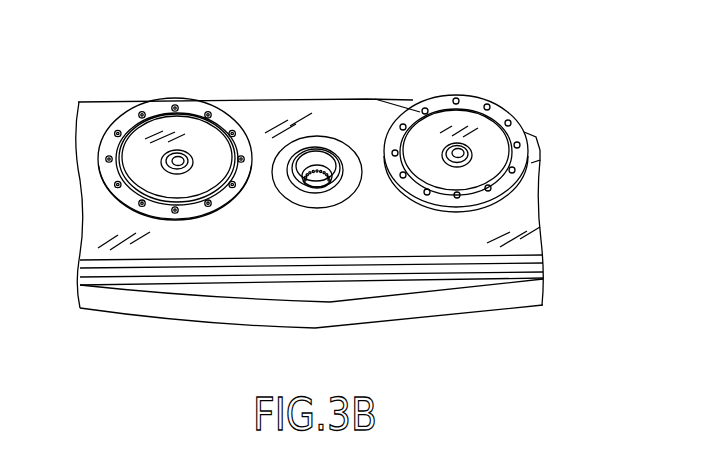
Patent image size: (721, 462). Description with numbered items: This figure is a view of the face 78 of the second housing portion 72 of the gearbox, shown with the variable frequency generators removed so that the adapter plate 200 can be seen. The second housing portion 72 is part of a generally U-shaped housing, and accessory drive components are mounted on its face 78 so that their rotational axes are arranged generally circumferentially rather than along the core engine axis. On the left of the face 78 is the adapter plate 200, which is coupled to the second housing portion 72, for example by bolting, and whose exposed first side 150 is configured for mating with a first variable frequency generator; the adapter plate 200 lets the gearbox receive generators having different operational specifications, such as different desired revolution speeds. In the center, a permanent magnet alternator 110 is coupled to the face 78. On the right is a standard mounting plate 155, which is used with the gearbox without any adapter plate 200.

The second housing portion 72 is at (122, 228).
The face 78 is at (533, 224).
The permanent magnet alternator 110 is at (332, 142).
The first side 150 is at (181, 129).
The standard mounting plate 155 is at (481, 95).
The adapter plate 200 is at (226, 104).